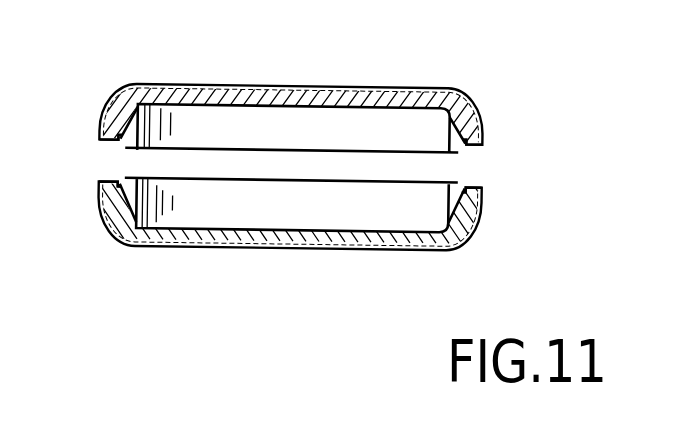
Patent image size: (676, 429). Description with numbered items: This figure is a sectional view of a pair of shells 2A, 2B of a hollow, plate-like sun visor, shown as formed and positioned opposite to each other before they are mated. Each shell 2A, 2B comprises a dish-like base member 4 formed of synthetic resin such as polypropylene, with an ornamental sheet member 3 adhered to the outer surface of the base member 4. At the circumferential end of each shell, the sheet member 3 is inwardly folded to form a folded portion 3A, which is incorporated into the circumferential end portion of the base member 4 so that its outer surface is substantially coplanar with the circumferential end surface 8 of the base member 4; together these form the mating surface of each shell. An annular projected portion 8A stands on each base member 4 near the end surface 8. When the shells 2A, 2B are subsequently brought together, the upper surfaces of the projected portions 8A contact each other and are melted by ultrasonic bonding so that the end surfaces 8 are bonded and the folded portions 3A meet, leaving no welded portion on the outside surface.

The shell 2A is at (401, 70).
The shell 2B is at (377, 268).
The ornamental sheet member 3 is at (285, 85).
The folded portion 3A is at (104, 184).
The base member 4 is at (347, 88).
The circumferential end surface 8 is at (123, 150).
The annular projected portion 8A is at (168, 147).